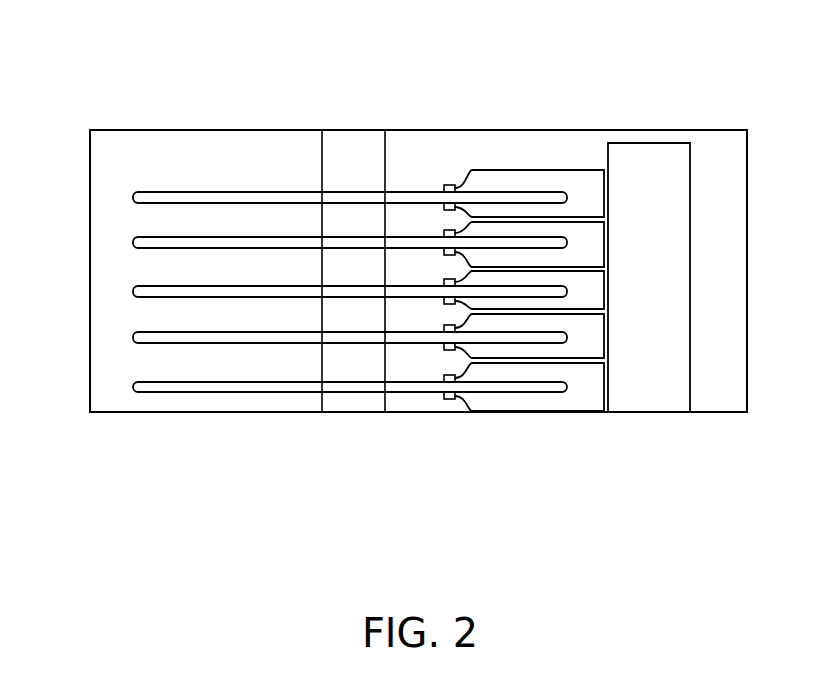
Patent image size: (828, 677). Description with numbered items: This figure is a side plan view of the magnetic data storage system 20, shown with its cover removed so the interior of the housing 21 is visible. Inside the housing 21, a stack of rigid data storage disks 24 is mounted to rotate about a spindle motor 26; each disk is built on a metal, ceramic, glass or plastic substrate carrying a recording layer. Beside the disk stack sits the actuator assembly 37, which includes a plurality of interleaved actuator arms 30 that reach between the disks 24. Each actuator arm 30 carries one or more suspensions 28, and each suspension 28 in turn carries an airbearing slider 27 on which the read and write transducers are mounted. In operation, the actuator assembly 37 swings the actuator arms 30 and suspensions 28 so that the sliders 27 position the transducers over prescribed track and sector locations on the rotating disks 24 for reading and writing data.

The magnetic data storage system 20 is at (660, 97).
The housing 21 is at (748, 303).
The rigid data storage disks 24 is at (133, 197).
The spindle motor 26 is at (347, 404).
The airbearing sliders 27 is at (445, 204).
The suspensions 28 is at (466, 178).
The actuator arms 30 is at (525, 168).
The actuator assembly 37 is at (647, 390).